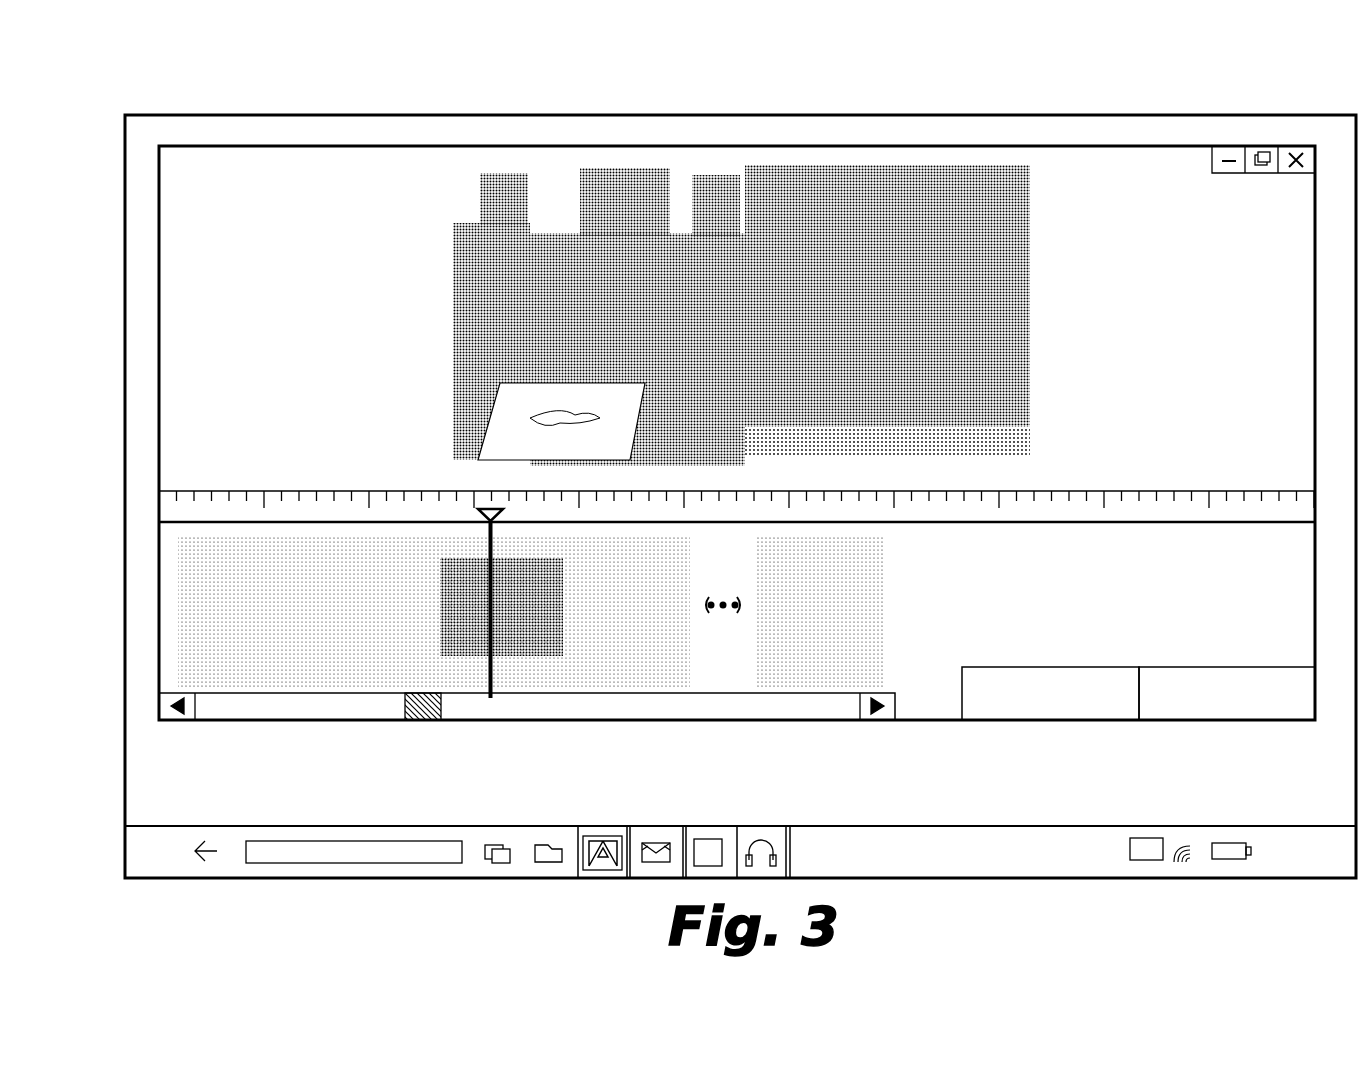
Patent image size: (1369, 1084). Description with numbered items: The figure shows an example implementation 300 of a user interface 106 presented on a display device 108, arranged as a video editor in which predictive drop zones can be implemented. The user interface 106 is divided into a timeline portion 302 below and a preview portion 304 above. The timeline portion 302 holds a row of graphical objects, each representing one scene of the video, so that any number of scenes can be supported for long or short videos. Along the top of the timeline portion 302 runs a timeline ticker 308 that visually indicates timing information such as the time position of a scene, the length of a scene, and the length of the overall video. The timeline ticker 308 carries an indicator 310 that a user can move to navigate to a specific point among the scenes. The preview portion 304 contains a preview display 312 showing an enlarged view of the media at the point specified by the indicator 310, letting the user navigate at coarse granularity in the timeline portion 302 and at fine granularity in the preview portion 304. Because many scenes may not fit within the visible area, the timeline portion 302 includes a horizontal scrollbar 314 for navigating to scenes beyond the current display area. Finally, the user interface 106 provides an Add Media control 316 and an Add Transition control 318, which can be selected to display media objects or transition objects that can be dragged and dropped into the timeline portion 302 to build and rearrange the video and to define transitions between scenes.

The example implementation 300 is at (177, 82).
The display device 108 is at (1103, 115).
The user interface 106 is at (963, 146).
The preview portion 304 is at (159, 275).
The preview display 312 is at (562, 167).
The timeline ticker 308 is at (159, 502).
The indicator 310 is at (480, 506).
The timeline portion 302 is at (159, 630).
The scrollbar 314 is at (180, 693).
The control 316 is at (1052, 720).
The control 318 is at (1192, 720).